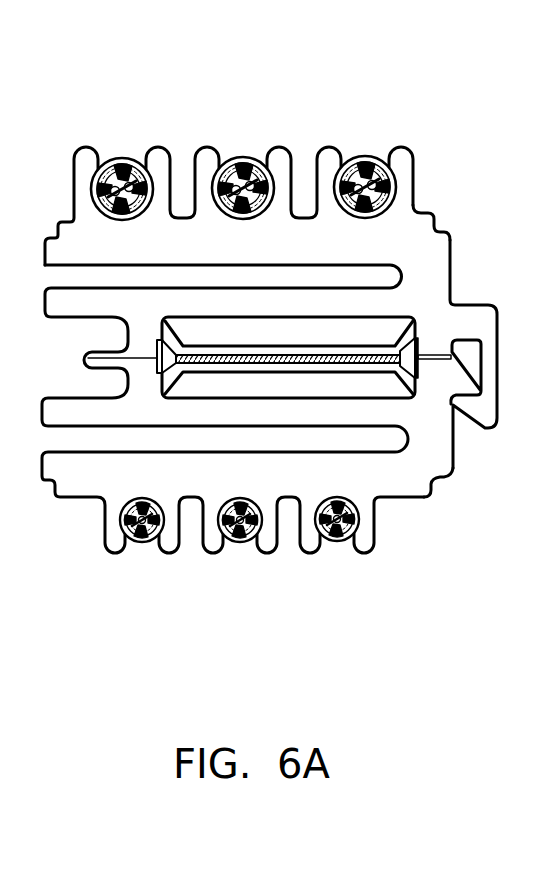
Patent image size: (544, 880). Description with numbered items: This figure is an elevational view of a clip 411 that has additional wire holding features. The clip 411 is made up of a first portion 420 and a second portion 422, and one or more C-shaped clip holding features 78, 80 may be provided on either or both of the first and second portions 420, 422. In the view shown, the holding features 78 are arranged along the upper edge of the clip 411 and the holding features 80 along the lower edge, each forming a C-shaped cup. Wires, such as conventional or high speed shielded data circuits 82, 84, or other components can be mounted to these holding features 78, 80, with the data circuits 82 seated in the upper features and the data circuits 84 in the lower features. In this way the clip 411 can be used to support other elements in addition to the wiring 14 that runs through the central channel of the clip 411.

The wiring 14 is at (216, 364).
The C-shaped clip holding feature 78 is at (208, 160).
The C-shaped clip holding feature 80 is at (368, 547).
The shielded data circuit 82 is at (358, 160).
The shielded data circuit 84 is at (247, 547).
The clip 411 is at (455, 160).
The first portion 420 is at (458, 483).
The second portion 422 is at (460, 240).